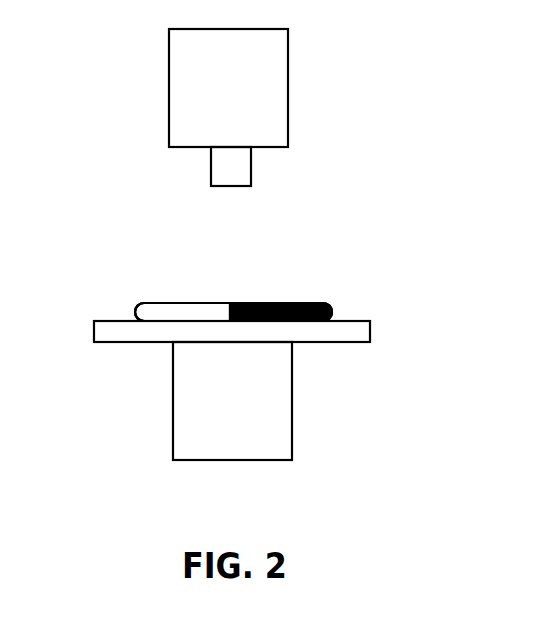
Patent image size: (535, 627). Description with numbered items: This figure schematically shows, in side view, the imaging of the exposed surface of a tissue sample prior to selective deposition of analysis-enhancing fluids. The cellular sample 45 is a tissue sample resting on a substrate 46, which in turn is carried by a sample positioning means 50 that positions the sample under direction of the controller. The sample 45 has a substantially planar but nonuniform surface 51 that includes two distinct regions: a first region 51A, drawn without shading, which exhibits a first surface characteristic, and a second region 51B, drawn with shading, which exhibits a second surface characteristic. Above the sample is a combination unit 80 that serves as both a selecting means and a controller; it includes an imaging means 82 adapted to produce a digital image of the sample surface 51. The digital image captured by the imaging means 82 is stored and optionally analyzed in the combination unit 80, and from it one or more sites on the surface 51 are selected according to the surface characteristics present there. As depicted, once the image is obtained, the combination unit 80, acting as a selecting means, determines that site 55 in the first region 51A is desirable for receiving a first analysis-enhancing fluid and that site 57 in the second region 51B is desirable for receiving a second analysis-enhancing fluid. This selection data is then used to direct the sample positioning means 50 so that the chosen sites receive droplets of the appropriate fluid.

The combination unit 80 is at (288, 73).
The imaging means 82 is at (251, 165).
The cellular sample 45 is at (334, 314).
The substrate 46 is at (370, 330).
The sample positioning means 50 is at (292, 408).
The surface 51 is at (232, 303).
The first region 51A is at (147, 302).
The second region 51B is at (318, 302).
The site 55 is at (187, 302).
The site 57 is at (282, 303).